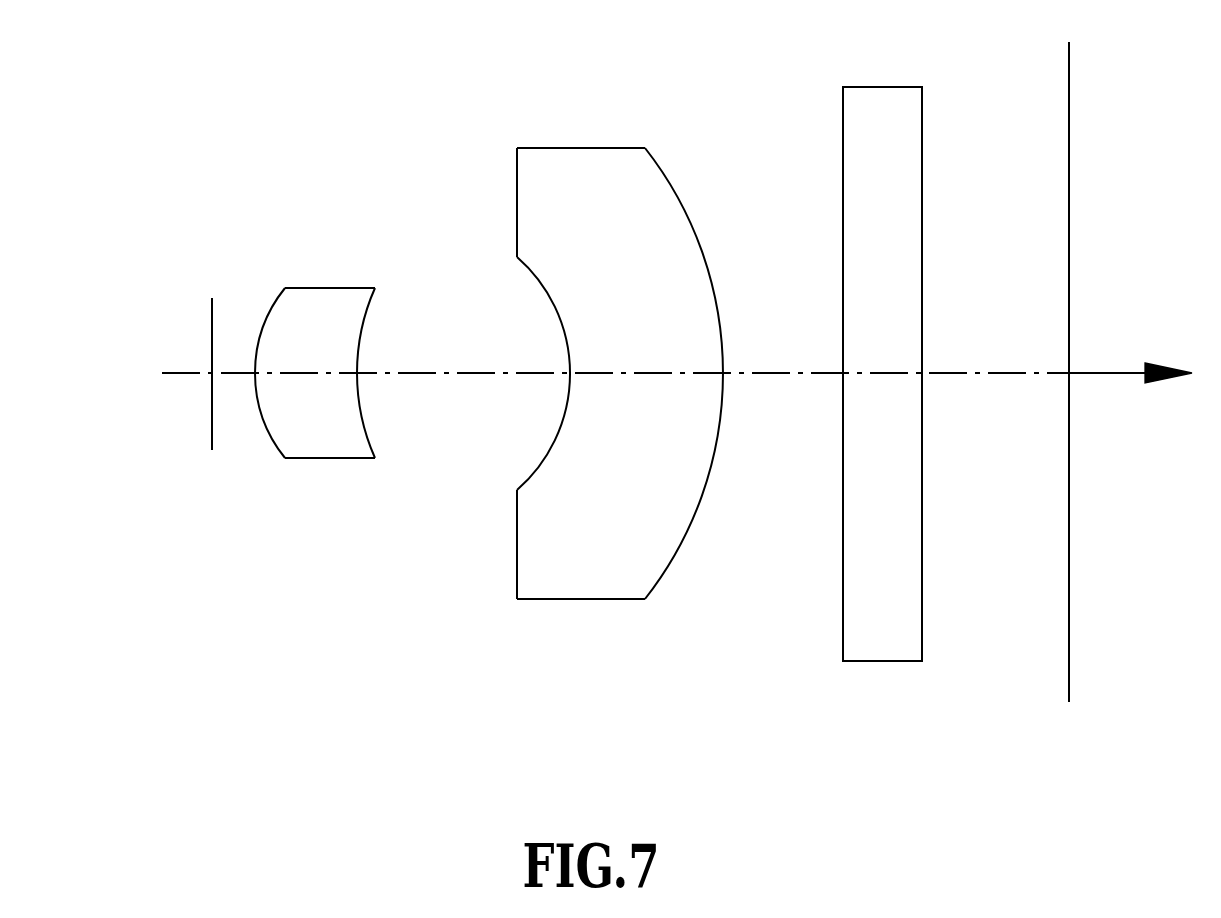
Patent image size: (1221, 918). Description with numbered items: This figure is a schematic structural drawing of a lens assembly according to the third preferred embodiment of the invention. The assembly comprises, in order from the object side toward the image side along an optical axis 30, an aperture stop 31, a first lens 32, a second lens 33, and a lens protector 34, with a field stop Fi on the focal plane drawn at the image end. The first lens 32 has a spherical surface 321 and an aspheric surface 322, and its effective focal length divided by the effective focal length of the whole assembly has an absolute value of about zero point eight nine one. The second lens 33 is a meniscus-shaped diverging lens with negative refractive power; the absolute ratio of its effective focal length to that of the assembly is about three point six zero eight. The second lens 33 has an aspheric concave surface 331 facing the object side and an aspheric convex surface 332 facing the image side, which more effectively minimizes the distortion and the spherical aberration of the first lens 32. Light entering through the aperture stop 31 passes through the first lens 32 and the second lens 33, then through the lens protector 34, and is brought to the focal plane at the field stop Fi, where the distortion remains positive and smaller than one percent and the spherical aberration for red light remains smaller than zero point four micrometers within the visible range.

The optical axis 30 is at (190, 373).
The aperture stop 31 is at (212, 298).
The first lens 32 is at (317, 385).
The spherical surface 321 is at (265, 430).
The aspheric surface 322 is at (373, 300).
The second lens 33 is at (571, 405).
The aspheric concave surface 331 is at (563, 408).
The aspheric convex surface 332 is at (685, 207).
The lens protector 34 is at (880, 661).
The field stop Fi is at (1069, 662).